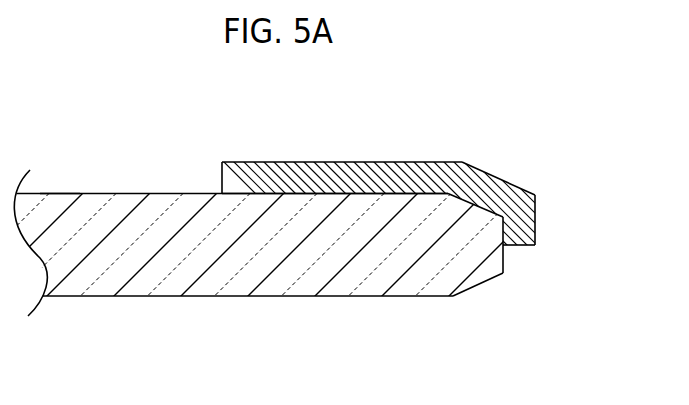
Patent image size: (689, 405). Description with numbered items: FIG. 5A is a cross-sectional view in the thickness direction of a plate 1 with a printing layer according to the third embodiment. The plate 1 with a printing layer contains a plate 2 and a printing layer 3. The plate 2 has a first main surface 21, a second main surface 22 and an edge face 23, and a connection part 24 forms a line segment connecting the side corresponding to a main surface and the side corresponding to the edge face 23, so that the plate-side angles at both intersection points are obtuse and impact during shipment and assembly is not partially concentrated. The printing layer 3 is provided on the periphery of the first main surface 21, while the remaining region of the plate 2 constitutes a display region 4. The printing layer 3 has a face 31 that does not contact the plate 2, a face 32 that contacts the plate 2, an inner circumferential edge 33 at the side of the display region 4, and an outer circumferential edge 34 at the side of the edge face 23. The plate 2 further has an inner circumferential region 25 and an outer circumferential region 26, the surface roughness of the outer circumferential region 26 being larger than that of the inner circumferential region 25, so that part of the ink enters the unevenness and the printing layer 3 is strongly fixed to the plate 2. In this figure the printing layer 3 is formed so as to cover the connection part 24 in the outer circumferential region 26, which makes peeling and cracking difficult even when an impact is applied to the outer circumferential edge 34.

The plate with a printing layer 1 is at (395, 106).
The plate 2 is at (111, 275).
The printing layer 3 is at (335, 163).
The display region 4 is at (60, 193).
The first main surface 21 is at (100, 193).
The second main surface 22 is at (198, 297).
The edge face 23 is at (503, 273).
The connection part 24 is at (505, 182).
The inner circumferential region 25 is at (240, 194).
The outer circumferential region 26 is at (451, 294).
The face not in contact with the plate 31 is at (278, 163).
The face in contact with the plate 32 is at (355, 194).
The inner circumferential edge 33 is at (222, 174).
The outer circumferential edge 34 is at (537, 245).